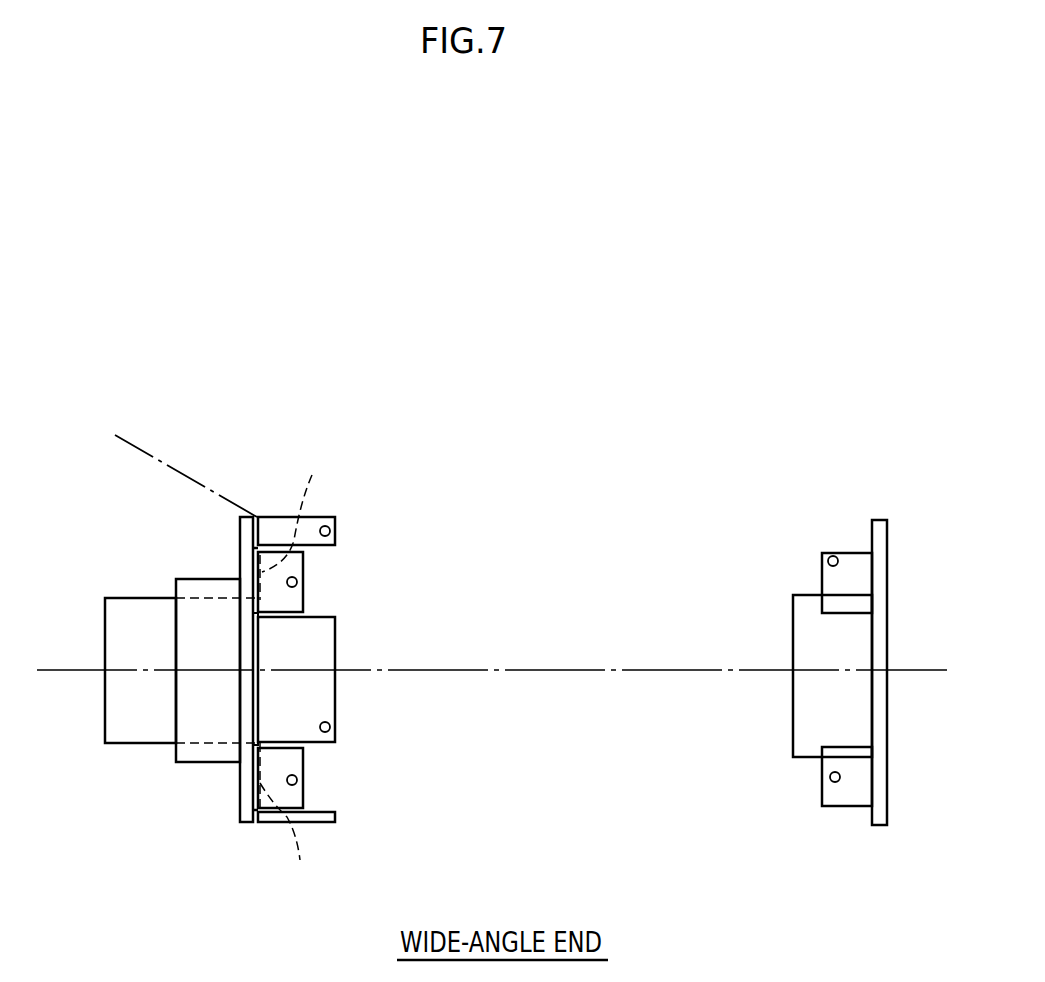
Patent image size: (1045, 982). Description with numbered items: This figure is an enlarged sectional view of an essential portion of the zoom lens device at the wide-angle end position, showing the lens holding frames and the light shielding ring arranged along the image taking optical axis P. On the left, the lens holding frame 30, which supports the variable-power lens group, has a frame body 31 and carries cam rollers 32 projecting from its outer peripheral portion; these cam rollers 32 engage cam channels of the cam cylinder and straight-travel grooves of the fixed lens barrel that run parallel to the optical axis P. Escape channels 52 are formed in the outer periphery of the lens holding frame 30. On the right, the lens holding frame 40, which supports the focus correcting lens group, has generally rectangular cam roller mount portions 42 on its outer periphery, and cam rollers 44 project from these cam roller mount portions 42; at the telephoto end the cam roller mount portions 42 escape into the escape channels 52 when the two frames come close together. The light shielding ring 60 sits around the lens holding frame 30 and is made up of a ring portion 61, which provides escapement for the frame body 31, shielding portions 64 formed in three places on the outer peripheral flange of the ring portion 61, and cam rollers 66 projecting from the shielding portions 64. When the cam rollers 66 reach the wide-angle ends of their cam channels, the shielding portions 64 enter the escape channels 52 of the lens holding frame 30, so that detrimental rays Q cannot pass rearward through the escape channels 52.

The lens holding frame 30 is at (134, 660).
The frame body 31 is at (140, 735).
The cam rollers 32 is at (331, 532).
The lens holding frame 40 is at (809, 680).
The cam roller mount portions 42 is at (830, 587).
The cam rollers 44 is at (850, 558).
The escape channels 52 is at (306, 661).
The light shielding ring 60 is at (209, 665).
The ring portion 61 is at (207, 755).
The shielding portions 64 is at (282, 598).
The cam rollers 66 is at (298, 581).
The image taking optical axis P is at (510, 670).
The detrimental rays Q is at (200, 478).